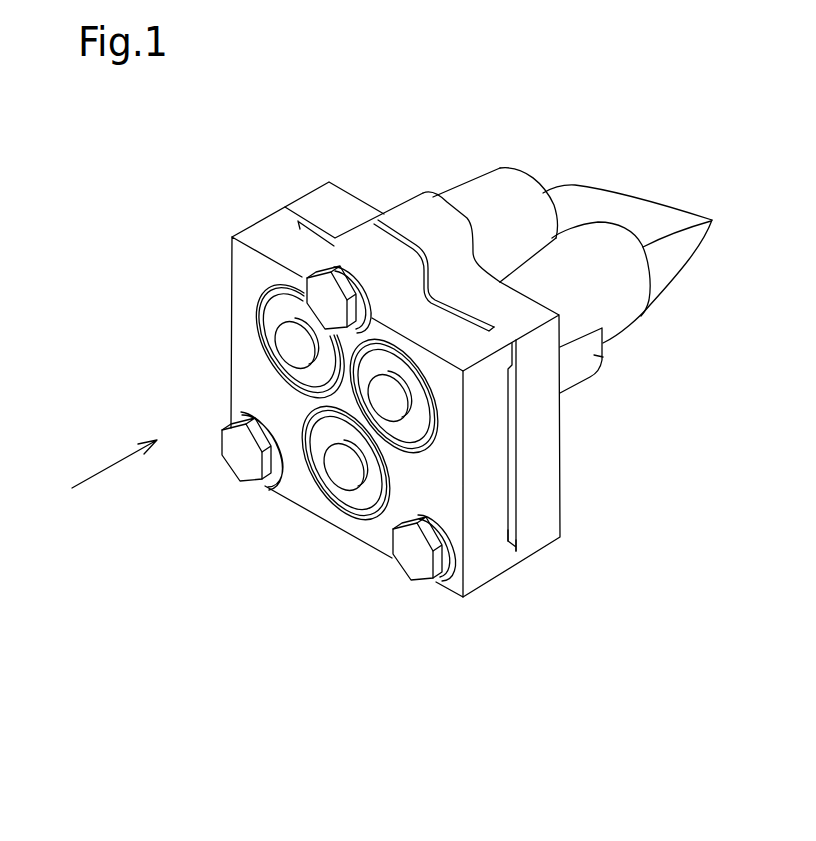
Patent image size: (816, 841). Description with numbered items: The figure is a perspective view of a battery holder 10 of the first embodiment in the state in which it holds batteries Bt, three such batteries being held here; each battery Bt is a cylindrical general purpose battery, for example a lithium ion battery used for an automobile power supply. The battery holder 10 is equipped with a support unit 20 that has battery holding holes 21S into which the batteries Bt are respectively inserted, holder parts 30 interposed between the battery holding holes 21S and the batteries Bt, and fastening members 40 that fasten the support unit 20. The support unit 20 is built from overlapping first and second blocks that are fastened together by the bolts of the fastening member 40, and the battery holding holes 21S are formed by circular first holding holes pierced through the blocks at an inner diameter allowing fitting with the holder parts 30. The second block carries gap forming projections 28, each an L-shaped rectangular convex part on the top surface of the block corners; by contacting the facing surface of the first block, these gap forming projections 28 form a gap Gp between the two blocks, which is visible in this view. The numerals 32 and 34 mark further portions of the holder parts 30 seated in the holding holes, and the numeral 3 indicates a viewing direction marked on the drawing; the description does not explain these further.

The viewing direction arrow 3 is at (115, 465).
The battery holder 10 is at (343, 436).
The support unit 20 is at (350, 552).
The battery holding hole 21S is at (305, 432).
The gap forming projection 28 is at (508, 553).
The holder part 30 is at (276, 495).
The collar ring 32 is at (300, 503).
The bolt end 34 is at (322, 530).
The fastening member 40 is at (400, 570).
The gap Gp is at (512, 472).
The battery Bt is at (587, 280).